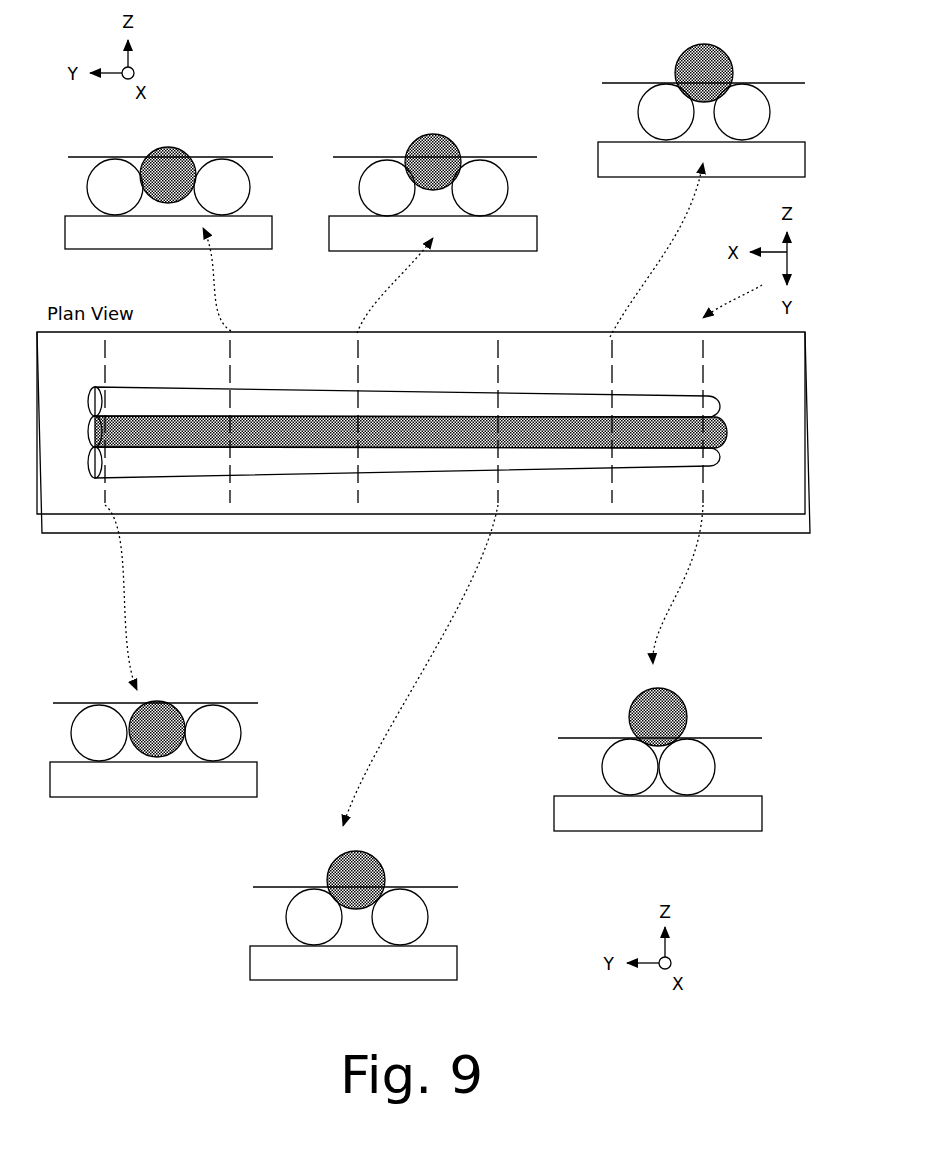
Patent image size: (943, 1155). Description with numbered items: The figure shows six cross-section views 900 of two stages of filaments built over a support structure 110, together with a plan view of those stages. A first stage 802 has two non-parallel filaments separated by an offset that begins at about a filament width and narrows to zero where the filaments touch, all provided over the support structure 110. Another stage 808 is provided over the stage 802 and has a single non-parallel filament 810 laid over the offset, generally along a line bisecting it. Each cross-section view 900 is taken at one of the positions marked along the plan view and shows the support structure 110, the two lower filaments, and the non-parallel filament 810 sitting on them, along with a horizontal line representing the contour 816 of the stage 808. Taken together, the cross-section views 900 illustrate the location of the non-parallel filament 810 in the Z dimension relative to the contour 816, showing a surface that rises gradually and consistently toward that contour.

The support structure 110 is at (110, 240).
The non-parallel filament 810 is at (558, 310).
The contour 816 is at (257, 157).
The stage 802 is at (315, 463).
The stage 808 is at (537, 436).
The cross-section views 900 is at (135, 1008).